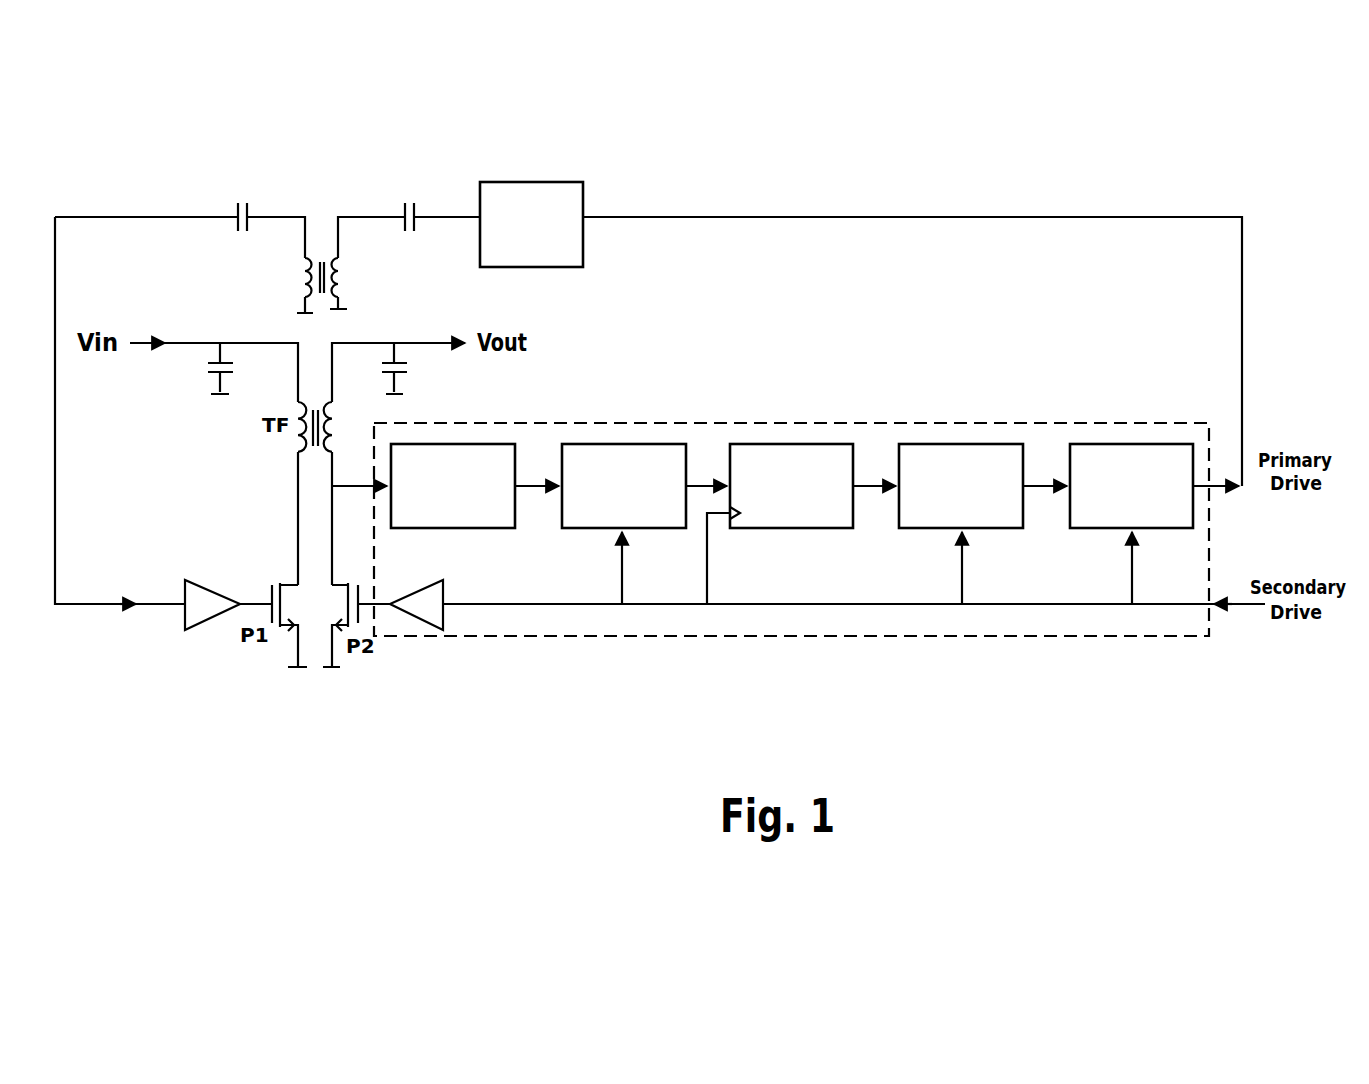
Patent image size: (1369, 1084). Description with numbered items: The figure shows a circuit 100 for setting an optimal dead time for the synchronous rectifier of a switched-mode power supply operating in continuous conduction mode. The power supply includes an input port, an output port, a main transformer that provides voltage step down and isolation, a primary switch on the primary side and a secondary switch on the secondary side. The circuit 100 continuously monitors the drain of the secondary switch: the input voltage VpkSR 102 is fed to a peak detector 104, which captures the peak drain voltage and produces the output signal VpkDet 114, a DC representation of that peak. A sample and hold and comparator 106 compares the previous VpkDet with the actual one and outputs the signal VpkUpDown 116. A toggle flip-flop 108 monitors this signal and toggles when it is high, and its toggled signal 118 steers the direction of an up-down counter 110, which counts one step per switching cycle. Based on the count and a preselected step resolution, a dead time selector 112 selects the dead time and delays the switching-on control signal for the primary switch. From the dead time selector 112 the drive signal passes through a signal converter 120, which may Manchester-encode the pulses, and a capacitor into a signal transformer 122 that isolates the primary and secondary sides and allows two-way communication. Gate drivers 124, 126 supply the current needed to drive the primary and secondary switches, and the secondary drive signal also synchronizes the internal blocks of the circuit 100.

The circuit 100 is at (1123, 637).
The input voltage VpkSR 102 is at (340, 490).
The peak detector 104 is at (493, 528).
The sample & hold and comparator 106 is at (655, 528).
The toggle flip-flop 108 is at (830, 528).
The up-down counter 110 is at (1002, 528).
The dead time selector 112 is at (1088, 528).
The output signal VpkDet 114 is at (525, 490).
The signal VpkUpDown 116 is at (710, 480).
The toggled signal 118 is at (868, 490).
The signal converter 120 is at (531, 224).
The signal transformer 122 is at (300, 277).
The gate driver 124 is at (198, 630).
The gate driver 126 is at (427, 630).